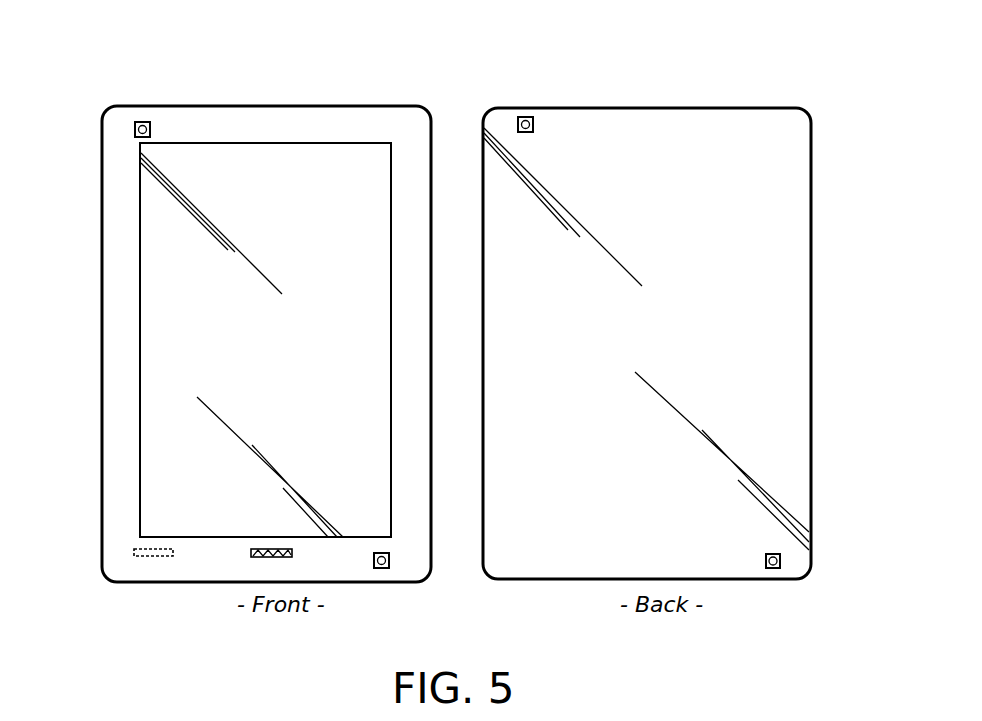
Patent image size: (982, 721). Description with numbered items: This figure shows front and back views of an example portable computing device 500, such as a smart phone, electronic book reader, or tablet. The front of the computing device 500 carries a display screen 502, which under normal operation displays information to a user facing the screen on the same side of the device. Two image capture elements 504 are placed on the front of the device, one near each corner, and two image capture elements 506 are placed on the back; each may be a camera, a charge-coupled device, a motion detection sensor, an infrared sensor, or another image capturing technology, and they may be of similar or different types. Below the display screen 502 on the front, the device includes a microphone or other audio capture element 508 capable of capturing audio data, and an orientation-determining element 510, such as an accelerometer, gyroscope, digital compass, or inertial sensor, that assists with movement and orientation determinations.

The computing device 500 is at (834, 91).
The display screen 502 is at (140, 257).
The image capture elements 504 is at (135, 130).
The image capture elements 506 is at (523, 116).
The audio capture element 508 is at (282, 557).
The orientation-determining element 510 is at (151, 557).